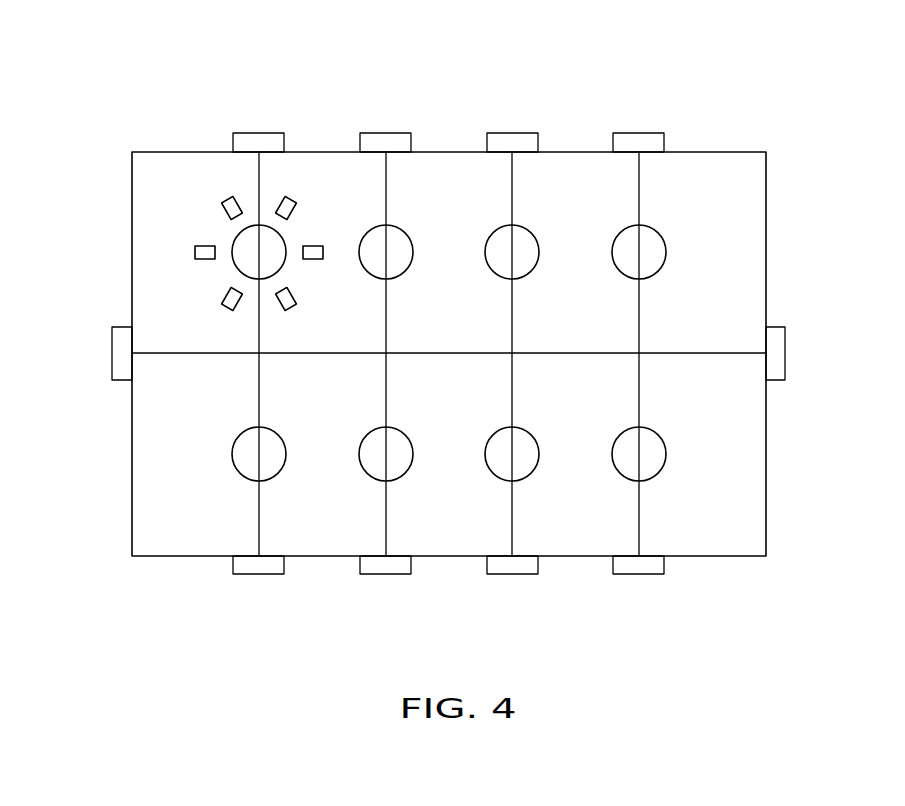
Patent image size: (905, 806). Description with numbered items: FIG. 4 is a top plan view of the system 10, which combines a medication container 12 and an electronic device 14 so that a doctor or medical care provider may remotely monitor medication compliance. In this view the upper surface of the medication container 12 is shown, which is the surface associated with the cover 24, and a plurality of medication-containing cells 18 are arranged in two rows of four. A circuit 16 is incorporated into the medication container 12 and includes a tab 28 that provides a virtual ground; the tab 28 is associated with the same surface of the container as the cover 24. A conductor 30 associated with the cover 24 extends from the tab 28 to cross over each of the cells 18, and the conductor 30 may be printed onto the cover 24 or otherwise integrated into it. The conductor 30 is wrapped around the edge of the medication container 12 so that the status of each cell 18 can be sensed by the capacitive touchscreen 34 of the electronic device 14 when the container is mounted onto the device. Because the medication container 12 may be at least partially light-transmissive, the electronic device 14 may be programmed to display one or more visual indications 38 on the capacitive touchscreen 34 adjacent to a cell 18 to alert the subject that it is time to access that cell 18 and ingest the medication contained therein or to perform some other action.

The system 10 is at (398, 322).
The medication container 12 is at (398, 393).
The electronic device 14 is at (149, 456).
The capacitive touchscreen 34 is at (449, 354).
The circuit 16 is at (449, 311).
The cell 18 is at (282, 235).
The cover 24 is at (750, 455).
The tab 28 is at (112, 340).
The conductor 30 is at (256, 133).
The visual indication 38 is at (203, 245).